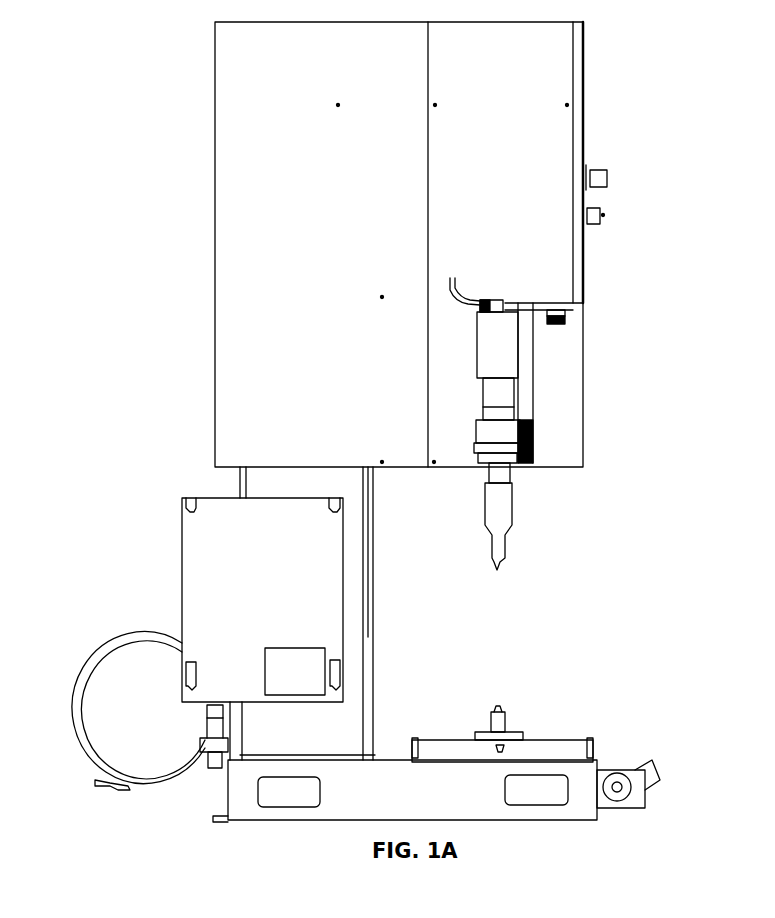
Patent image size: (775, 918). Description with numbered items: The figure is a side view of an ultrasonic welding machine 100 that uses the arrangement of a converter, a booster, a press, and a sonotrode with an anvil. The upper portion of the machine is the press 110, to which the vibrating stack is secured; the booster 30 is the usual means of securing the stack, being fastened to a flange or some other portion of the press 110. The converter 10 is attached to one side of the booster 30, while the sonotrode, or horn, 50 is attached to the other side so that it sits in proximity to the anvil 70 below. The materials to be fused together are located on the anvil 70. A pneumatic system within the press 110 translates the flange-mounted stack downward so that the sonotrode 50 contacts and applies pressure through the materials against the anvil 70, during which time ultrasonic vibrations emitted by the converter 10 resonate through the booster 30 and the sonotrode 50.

The ultrasonic welding machine 100 is at (412, 422).
The press 110 is at (537, 268).
The converter 10 is at (503, 375).
The booster 30 is at (533, 418).
The sonotrode (horn) 50 is at (500, 512).
The anvil 70 is at (503, 708).